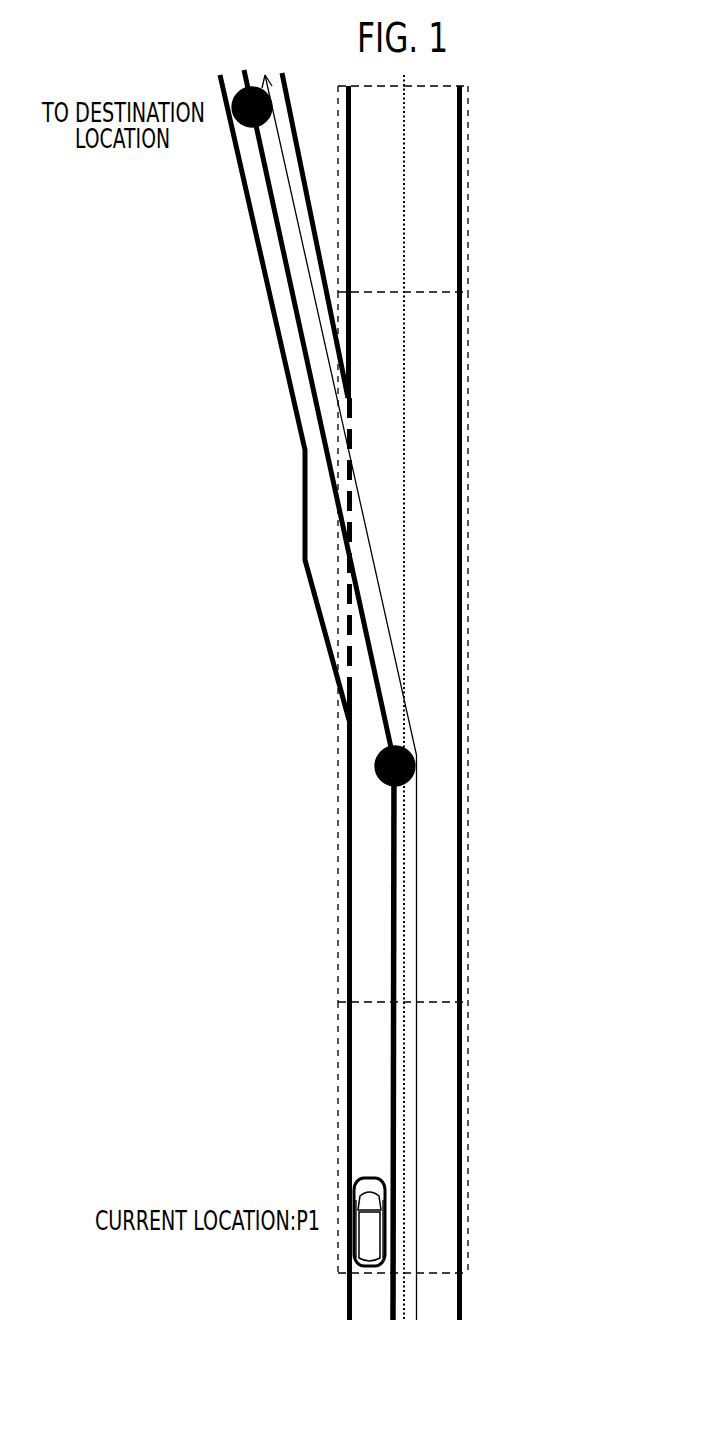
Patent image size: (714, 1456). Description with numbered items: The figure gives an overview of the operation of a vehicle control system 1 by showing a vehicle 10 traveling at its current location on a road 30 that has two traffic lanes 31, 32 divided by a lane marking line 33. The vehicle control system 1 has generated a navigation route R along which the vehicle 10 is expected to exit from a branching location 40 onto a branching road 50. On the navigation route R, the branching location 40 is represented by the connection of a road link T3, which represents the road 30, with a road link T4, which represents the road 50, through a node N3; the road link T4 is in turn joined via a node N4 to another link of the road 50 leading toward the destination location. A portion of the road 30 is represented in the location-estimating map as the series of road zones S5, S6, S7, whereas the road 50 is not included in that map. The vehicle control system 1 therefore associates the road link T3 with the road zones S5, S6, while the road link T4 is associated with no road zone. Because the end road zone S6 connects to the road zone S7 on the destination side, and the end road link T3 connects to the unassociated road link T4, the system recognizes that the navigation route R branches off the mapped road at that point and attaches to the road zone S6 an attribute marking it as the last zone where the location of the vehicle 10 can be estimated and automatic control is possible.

The vehicle control system 1 is at (348, 1190).
The vehicle 10 is at (353, 1232).
The road 30 is at (460, 115).
The traffic lane 31 is at (396, 145).
The traffic lane 32 is at (449, 145).
The lane marking line 33 is at (405, 402).
The branching location 40 is at (349, 721).
The branching road 50 is at (280, 350).
The node N3 is at (376, 766).
The node N4 is at (234, 100).
The road link T3 is at (396, 1097).
The road link T4 is at (268, 190).
The navigation route R is at (417, 880).
The road zone S5 is at (338, 1152).
The road zone S6 is at (338, 953).
The road zone S7 is at (468, 213).